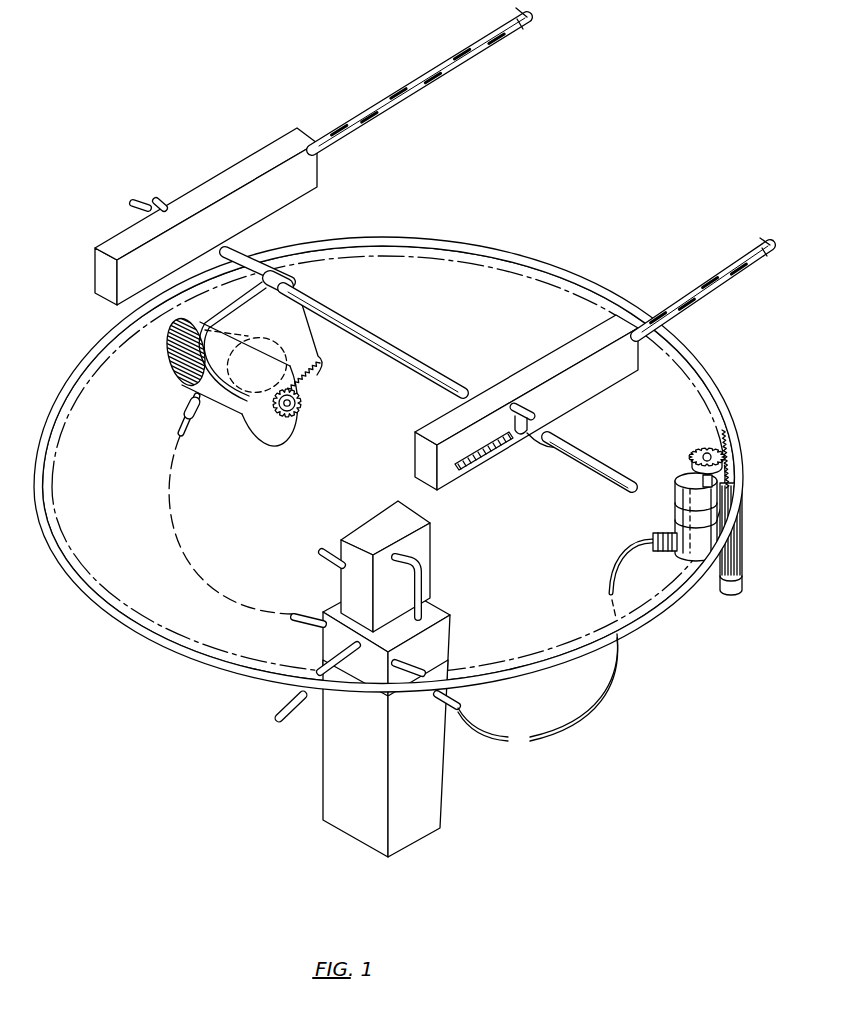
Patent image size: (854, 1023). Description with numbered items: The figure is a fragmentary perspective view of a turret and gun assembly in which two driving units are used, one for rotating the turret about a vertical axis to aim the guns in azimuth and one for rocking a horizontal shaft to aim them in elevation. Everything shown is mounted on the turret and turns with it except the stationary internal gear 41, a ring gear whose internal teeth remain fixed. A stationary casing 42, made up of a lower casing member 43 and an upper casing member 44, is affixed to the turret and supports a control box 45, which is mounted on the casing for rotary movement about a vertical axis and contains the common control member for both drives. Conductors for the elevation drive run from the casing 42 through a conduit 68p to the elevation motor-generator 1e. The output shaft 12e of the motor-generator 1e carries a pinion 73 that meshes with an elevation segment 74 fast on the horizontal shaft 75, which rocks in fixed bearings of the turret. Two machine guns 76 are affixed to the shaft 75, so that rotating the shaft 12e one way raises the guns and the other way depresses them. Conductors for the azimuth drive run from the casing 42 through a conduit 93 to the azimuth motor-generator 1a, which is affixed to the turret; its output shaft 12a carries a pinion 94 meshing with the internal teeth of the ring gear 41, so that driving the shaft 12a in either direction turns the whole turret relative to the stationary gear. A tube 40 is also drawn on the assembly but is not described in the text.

The azimuth motor-generator 1a is at (675, 518).
The elevation motor-generator 1e is at (215, 401).
The output shaft 12a is at (705, 447).
The output shaft 12e is at (291, 410).
The tube 40 is at (277, 701).
The stationary internal gear 41 is at (181, 641).
The stationary casing 42 is at (399, 679).
The lower casing member 43 is at (436, 785).
The upper casing member 44 is at (450, 642).
The control box 45 is at (441, 536).
The conduit 68p is at (185, 421).
The pinion 73 is at (280, 412).
The elevation segment 74 is at (321, 363).
The horizontal shaft 75 is at (341, 316).
The machine guns 76 is at (244, 163).
The conduit 93 is at (599, 719).
The pinion 94 is at (691, 454).